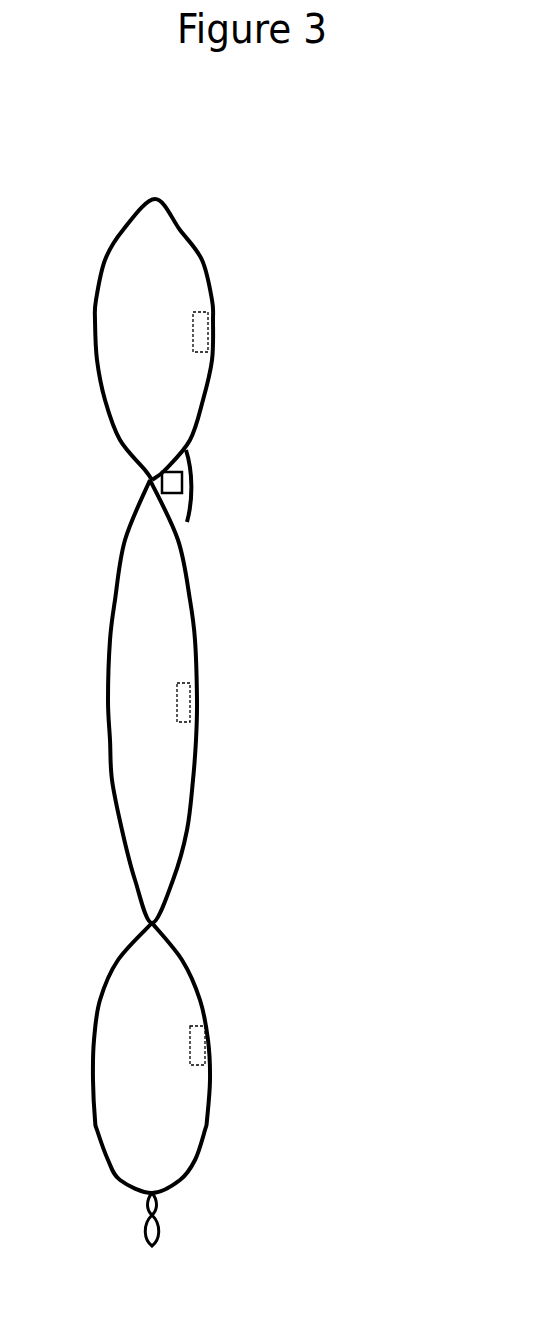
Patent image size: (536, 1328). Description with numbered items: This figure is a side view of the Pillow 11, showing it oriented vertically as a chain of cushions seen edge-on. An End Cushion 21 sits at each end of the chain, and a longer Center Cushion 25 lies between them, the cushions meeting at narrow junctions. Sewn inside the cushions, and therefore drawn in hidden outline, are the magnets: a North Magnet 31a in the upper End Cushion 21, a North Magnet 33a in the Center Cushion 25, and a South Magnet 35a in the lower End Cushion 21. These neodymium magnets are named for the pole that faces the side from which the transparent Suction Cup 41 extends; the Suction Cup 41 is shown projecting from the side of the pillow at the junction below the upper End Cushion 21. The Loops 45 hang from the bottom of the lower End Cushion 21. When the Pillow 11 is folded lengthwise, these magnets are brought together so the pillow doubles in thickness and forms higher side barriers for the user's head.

The Pillow 11 is at (258, 696).
The End Cushion 21 is at (182, 255).
The Center Cushion 25 is at (168, 620).
The North Magnet 31a is at (200, 335).
The North Magnet 33a is at (185, 700).
The South Magnet 35a is at (197, 1050).
The Suction Cup 41 is at (197, 480).
The Loops 45 is at (160, 1215).